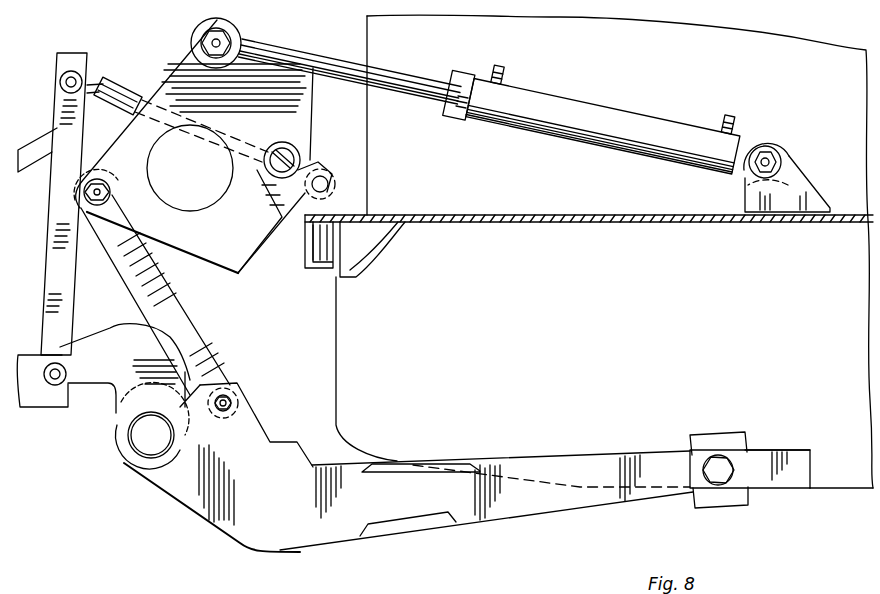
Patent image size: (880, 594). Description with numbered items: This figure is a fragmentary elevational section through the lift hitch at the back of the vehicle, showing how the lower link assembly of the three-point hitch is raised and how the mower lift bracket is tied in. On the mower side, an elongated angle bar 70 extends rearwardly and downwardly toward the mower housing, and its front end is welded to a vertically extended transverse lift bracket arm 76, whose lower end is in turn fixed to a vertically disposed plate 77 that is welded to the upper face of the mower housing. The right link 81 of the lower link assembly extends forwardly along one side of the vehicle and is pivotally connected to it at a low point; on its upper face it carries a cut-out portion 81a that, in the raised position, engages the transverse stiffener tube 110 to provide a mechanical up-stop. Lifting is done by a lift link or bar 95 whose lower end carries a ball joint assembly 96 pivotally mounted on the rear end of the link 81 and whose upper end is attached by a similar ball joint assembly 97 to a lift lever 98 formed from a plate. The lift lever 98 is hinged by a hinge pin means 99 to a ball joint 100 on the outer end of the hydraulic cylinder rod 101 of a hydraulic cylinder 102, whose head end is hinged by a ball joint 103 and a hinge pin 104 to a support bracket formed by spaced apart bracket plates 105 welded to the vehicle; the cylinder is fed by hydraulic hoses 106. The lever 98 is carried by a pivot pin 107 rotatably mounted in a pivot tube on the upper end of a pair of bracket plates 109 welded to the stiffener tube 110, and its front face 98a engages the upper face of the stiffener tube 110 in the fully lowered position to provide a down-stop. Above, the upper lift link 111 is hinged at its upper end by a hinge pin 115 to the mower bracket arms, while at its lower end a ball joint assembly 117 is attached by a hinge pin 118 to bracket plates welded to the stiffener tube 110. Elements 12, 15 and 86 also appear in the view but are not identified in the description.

The implement frame 12 is at (156, 490).
The machine frame 15 is at (346, 347).
The angle bar 70 is at (37, 142).
The lift bracket arm 76 is at (58, 206).
The plate 77 is at (45, 408).
The link 81 is at (286, 530).
The cut-out portion 81a is at (264, 414).
The side plate 86 is at (100, 335).
The lift link 95 is at (186, 322).
The ball joint assembly 96 is at (223, 416).
The ball joint assembly 97 is at (106, 186).
The lift lever 98 is at (166, 102).
The front face 98a is at (236, 280).
The hinge pin means 99 is at (210, 43).
The ball joint 100 is at (234, 40).
The hydraulic cylinder rod 101 is at (306, 60).
The hydraulic cylinder 102 is at (606, 116).
The ball joint 103 is at (784, 150).
The hinge pin 104 is at (760, 168).
The bracket plate 105 is at (793, 180).
The hydraulic hose 106 is at (506, 72).
The pivot pin 107 is at (298, 152).
The bracket plate 109 is at (300, 268).
The transverse stiffener tube 110 is at (320, 268).
The upper lift link 111 is at (121, 85).
The hinge pin 115 is at (70, 76).
The ball joint assembly 117 is at (328, 172).
The hinge pin 118 is at (332, 187).